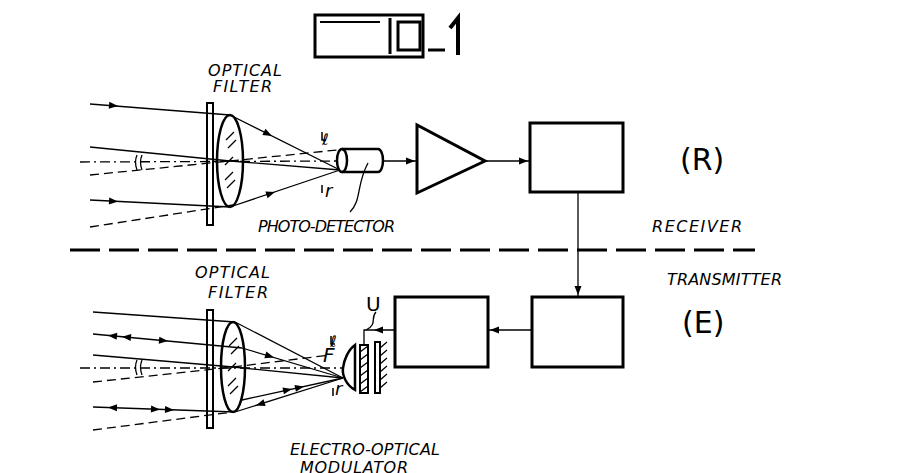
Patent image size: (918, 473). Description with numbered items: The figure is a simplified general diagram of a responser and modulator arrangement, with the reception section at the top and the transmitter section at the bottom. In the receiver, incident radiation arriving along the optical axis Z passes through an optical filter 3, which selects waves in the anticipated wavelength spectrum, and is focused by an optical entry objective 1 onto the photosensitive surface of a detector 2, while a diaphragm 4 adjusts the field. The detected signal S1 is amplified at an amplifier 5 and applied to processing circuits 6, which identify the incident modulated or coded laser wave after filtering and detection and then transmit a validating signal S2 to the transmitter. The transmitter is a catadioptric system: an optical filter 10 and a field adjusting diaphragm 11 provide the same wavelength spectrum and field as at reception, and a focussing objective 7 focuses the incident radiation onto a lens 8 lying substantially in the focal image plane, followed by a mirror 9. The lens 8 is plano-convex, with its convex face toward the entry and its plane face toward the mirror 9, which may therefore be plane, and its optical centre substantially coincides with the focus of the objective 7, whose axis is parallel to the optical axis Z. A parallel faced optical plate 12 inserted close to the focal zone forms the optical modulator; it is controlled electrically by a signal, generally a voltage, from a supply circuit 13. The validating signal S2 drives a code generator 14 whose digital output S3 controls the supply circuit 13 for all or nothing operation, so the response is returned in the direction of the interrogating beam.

The optical entry objective 1 is at (240, 133).
The detector 2 is at (362, 150).
The optical filter 3 is at (207, 116).
The diaphragm 4 is at (322, 135).
The amplifier 5 is at (435, 128).
The processing circuits 6 is at (548, 122).
The focussing objective 7 is at (240, 335).
The lens 8 is at (350, 345).
The mirror 9 is at (380, 393).
The optical filter 10 is at (207, 322).
The field adjusting diaphragm 11 is at (332, 342).
The parallel faced optical plate 12 is at (362, 393).
The supply circuit 13 is at (430, 297).
The code generator 14 is at (628, 297).
The detected signal S1 is at (390, 161).
The validating signal S2 is at (578, 232).
The digital output S3 is at (505, 330).
The optical axis Z is at (90, 162).